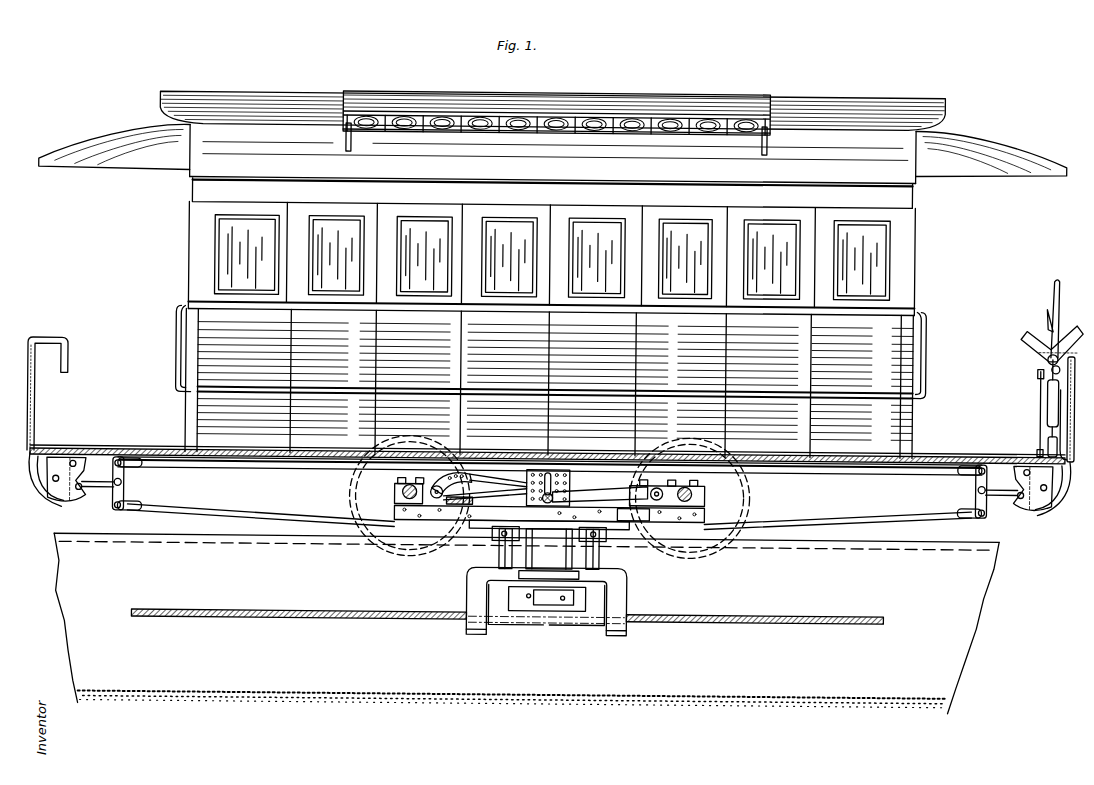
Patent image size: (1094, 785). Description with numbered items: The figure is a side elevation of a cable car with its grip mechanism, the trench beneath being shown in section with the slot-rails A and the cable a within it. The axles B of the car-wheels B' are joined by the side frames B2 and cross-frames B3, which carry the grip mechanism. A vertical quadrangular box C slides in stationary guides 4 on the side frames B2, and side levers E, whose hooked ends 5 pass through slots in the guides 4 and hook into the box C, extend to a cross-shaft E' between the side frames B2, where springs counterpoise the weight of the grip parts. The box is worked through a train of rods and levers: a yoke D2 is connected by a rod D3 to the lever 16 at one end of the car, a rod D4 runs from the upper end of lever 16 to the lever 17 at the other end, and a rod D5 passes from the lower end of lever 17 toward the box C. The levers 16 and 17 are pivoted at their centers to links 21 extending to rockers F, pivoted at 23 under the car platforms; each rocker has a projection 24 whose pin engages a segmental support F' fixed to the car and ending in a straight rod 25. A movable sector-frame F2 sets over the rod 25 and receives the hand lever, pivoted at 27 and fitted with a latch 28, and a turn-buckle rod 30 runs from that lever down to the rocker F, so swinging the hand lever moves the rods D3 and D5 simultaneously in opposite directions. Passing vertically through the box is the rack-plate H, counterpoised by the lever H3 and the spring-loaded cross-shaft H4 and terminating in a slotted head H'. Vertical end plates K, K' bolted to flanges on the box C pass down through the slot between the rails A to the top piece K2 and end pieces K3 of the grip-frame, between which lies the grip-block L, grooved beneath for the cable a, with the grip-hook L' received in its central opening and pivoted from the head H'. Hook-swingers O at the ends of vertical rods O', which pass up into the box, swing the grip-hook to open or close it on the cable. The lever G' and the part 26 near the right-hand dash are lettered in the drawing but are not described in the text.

The stationary guides 4 is at (550, 470).
The hooked ends 5 is at (553, 491).
The lever 16 is at (977, 479).
The lever 17 is at (125, 474).
The links 21 is at (550, 481).
The rocker pivot 23 is at (75, 460).
The projection 24 is at (66, 498).
The straight rod 25 is at (31, 381).
The dash rail 26 is at (1074, 368).
The handle pivot 27 is at (1048, 360).
The latch 28 is at (1048, 301).
The turn-buckle rod 30 is at (1050, 396).
The slot-rails A is at (526, 623).
The cable a is at (289, 616).
The axles B is at (552, 497).
The car-wheels B' is at (549, 497).
The side frames B2 is at (549, 513).
The cross-frames B3 is at (547, 476).
The vertical quadrangular box C is at (520, 483).
The yoke D2 is at (612, 522).
The rod D3 is at (843, 497).
The rod D4 is at (858, 466).
The rod D5 is at (256, 492).
The side levers E is at (600, 494).
The cross-shaft E' is at (633, 514).
The rockers F is at (550, 484).
The segmental support F' is at (543, 484).
The movable sector-frame F2 is at (1030, 334).
The hand lever G' is at (1064, 319).
The rack-plate H is at (549, 549).
The slotted head H' is at (546, 599).
The lever H3 is at (498, 477).
The cross-shaft H4 is at (452, 486).
The vertical end plate K is at (505, 549).
The vertical end plate K' is at (593, 549).
The top piece K2 is at (549, 575).
The end pieces K3 is at (555, 601).
The grip-block L is at (515, 604).
The grip-hook L' is at (576, 605).
The hook-swingers O is at (548, 593).
The vertical rods O' is at (549, 554).